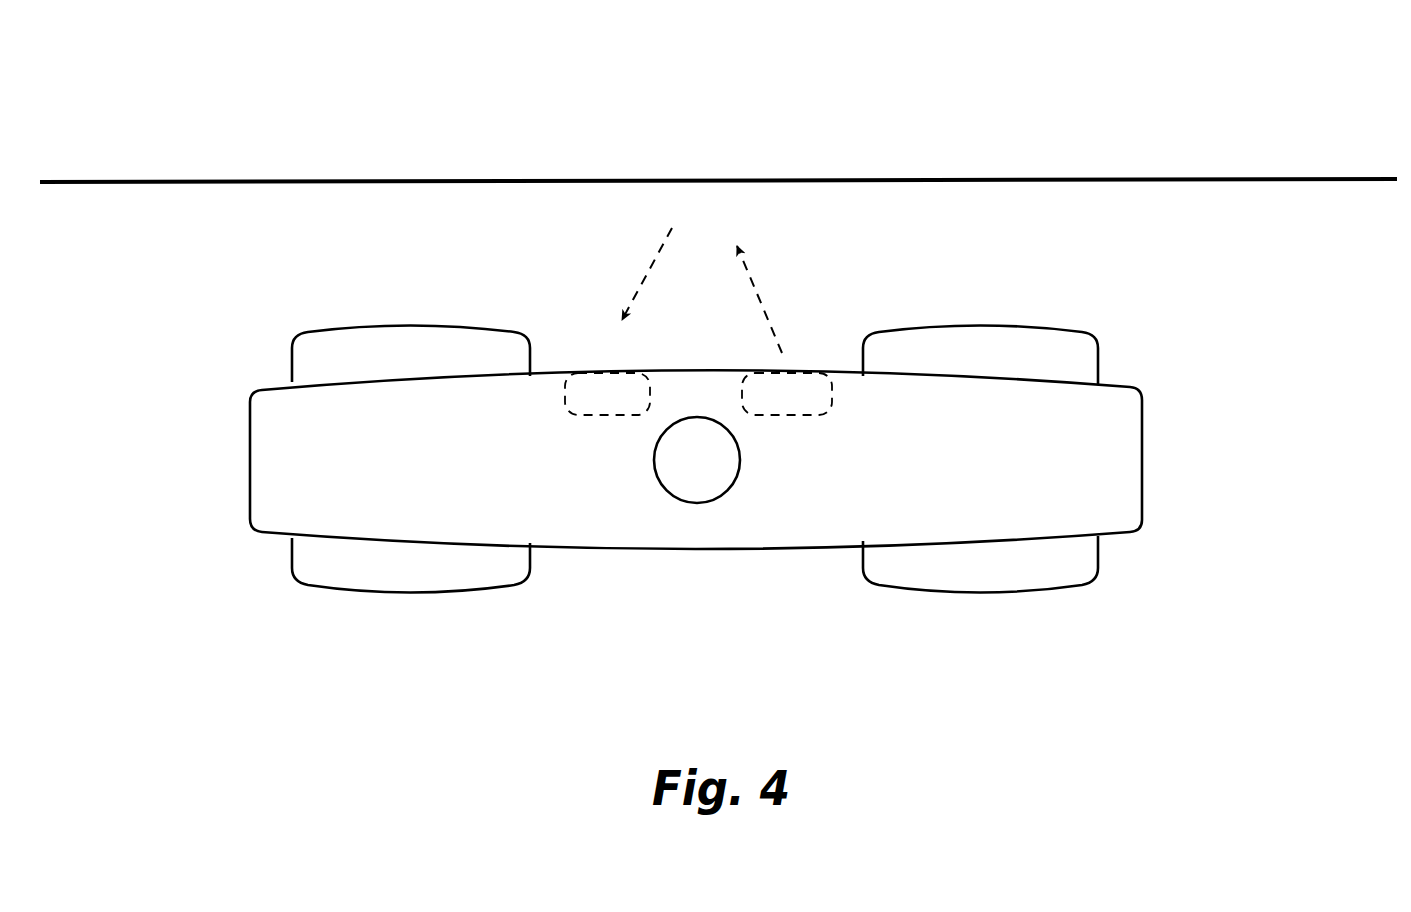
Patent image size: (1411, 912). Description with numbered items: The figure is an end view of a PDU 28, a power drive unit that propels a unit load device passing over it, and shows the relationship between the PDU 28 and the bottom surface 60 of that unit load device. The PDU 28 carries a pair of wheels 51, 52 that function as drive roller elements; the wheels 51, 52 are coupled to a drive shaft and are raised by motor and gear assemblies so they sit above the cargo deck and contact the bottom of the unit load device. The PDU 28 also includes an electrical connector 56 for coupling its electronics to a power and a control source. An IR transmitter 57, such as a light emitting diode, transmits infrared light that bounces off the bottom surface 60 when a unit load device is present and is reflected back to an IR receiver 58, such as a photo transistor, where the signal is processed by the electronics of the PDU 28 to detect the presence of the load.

The bottom surface 60 is at (998, 178).
The PDU 28 is at (233, 429).
The wheel 52 is at (408, 325).
The wheel 51 is at (1038, 323).
The electrical connector 56 is at (707, 483).
The IR receiver 58 is at (607, 387).
The IR transmitter 57 is at (805, 387).